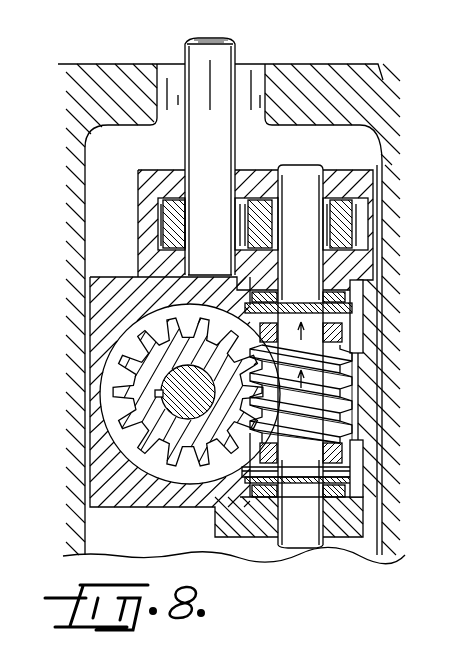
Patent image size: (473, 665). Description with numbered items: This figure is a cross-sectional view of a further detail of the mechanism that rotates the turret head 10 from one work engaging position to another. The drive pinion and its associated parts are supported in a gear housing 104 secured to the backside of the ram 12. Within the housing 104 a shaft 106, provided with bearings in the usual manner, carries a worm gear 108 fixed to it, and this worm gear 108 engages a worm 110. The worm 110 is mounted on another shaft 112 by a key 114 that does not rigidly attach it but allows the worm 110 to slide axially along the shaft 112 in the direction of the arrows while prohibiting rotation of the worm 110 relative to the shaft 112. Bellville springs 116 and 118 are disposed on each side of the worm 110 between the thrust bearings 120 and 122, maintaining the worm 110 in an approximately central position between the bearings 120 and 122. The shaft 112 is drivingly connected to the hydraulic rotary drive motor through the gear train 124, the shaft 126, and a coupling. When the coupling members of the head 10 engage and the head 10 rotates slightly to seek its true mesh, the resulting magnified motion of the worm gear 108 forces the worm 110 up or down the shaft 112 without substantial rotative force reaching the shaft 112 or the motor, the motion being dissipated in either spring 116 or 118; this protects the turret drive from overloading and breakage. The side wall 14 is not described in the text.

The ram 12 is at (76, 67).
The housing side wall 14 is at (354, 309).
The turret head 10 is at (268, 571).
The gear housing 104 is at (94, 433).
The shaft 106 is at (173, 377).
The worm gear 108 is at (120, 447).
The worm 110 is at (378, 373).
The shaft 112 is at (320, 261).
The key 114 is at (382, 414).
The spring 116 is at (362, 330).
The spring 118 is at (350, 468).
The thrust bearing 120 is at (348, 300).
The thrust bearing 122 is at (340, 492).
The gear train 124 is at (353, 212).
The shaft 126 is at (229, 52).